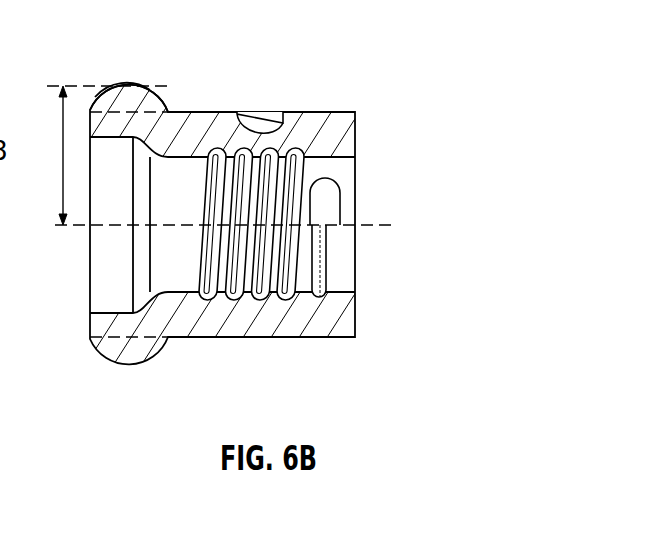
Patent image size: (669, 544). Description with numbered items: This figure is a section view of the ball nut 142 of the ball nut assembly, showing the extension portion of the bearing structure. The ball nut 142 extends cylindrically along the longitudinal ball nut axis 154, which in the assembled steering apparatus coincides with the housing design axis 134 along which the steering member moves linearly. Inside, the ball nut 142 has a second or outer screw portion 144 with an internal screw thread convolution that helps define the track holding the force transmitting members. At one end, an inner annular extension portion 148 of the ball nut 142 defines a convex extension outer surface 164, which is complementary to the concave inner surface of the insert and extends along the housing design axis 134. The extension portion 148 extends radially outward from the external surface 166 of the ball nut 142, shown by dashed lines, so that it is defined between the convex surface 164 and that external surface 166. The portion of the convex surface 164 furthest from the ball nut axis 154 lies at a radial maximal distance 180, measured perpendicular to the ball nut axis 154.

The ball nut 142 is at (347, 133).
The outer screw portion 144 is at (328, 254).
The annular extension portion 148 is at (142, 93).
The extension outer surface 164 is at (128, 84).
The external surface 166 is at (218, 113).
The housing design axis 134 is at (272, 244).
The ball nut axis 154 is at (373, 227).
The radial maximal distance 180 is at (56, 157).